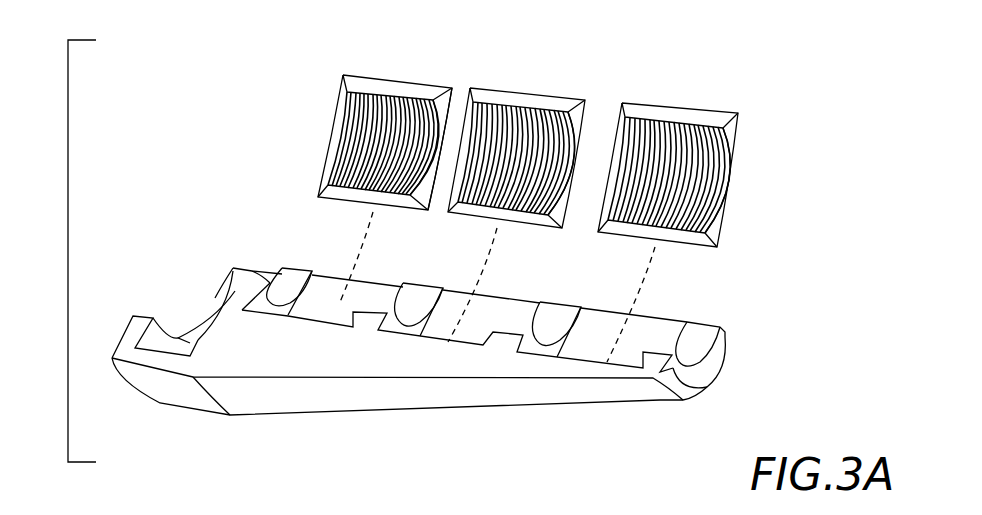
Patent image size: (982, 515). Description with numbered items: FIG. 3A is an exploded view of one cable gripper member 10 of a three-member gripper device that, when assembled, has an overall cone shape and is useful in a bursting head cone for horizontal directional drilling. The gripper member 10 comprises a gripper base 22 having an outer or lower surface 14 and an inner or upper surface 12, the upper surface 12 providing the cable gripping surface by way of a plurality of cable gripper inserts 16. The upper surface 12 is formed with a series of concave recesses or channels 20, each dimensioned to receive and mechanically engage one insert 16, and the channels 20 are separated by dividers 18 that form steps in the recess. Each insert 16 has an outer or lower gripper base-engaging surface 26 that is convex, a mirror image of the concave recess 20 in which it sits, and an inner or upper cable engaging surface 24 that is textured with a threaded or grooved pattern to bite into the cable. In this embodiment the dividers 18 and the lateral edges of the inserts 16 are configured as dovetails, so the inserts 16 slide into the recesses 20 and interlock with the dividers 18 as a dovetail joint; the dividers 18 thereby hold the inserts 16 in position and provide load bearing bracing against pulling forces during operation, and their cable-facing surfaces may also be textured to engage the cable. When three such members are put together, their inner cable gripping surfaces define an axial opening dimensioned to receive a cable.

The cable gripper member 10 is at (68, 262).
The upper surface 12 is at (720, 355).
The lower surface 14 is at (402, 400).
The cable gripper insert 16 is at (400, 88).
The divider 18 is at (550, 327).
The recess 20 is at (362, 275).
The gripper base 22 is at (624, 405).
The cable engaging surface 24 is at (365, 145).
The gripper base-engaging surface 26 is at (735, 152).